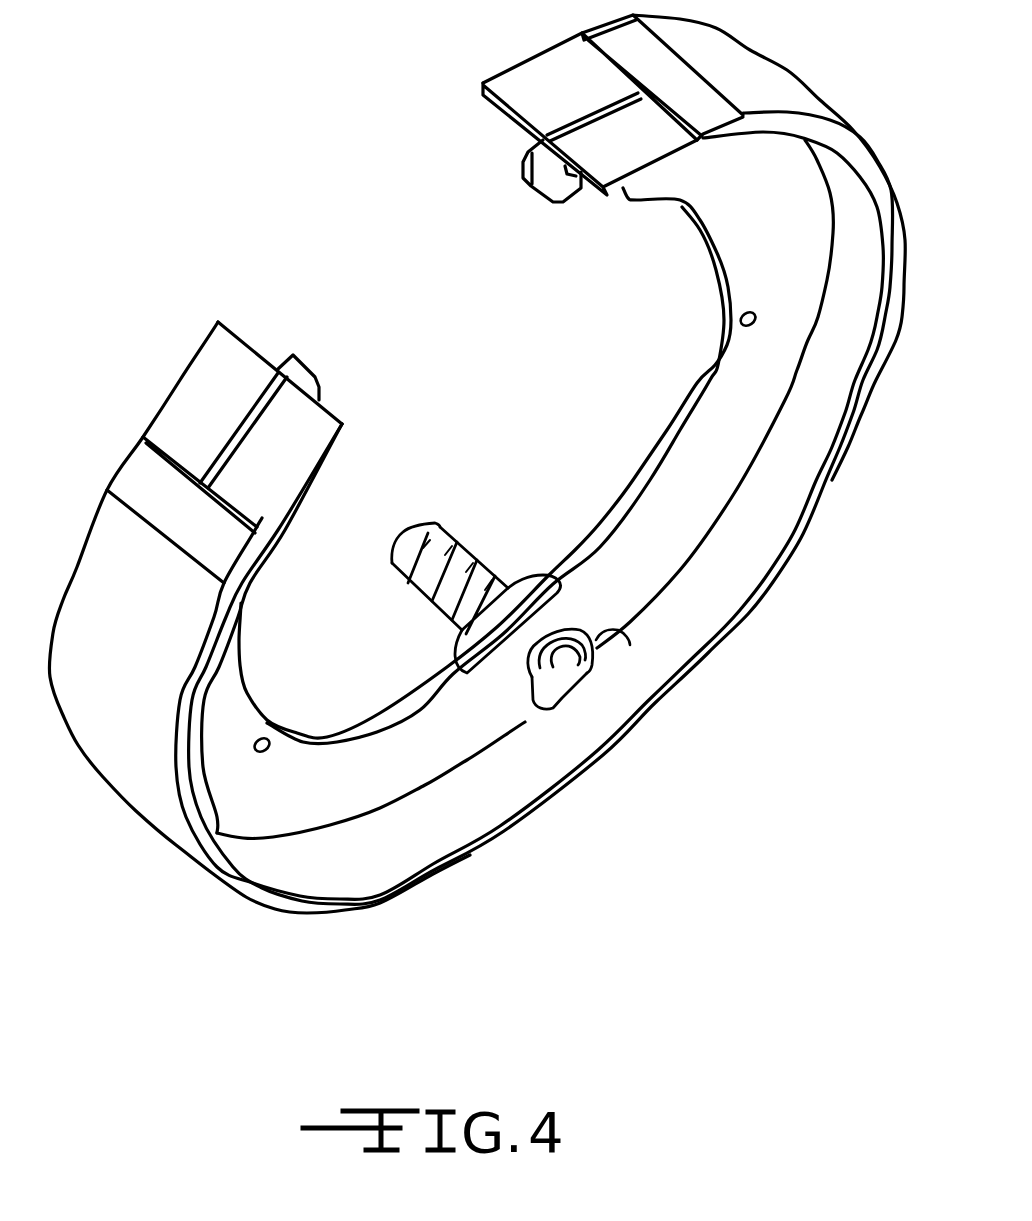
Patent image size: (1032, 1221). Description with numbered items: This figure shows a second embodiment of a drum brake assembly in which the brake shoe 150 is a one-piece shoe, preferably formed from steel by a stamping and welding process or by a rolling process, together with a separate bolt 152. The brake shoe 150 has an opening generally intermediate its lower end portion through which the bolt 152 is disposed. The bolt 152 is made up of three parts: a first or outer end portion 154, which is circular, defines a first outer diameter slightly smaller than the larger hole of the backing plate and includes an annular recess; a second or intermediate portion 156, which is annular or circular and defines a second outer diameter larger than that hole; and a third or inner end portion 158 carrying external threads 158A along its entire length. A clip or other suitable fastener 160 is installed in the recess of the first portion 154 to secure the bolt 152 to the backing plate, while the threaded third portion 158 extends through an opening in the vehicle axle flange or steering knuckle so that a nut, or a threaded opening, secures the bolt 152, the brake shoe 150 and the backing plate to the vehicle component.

The brake shoe 150 is at (750, 604).
The bolt 152 is at (441, 561).
The first or outer end portion 154 is at (567, 680).
The second or intermediate portion 156 is at (536, 585).
The third or inner end portion 158 is at (386, 541).
The external threads 158A is at (393, 582).
The fastener 160 is at (600, 640).